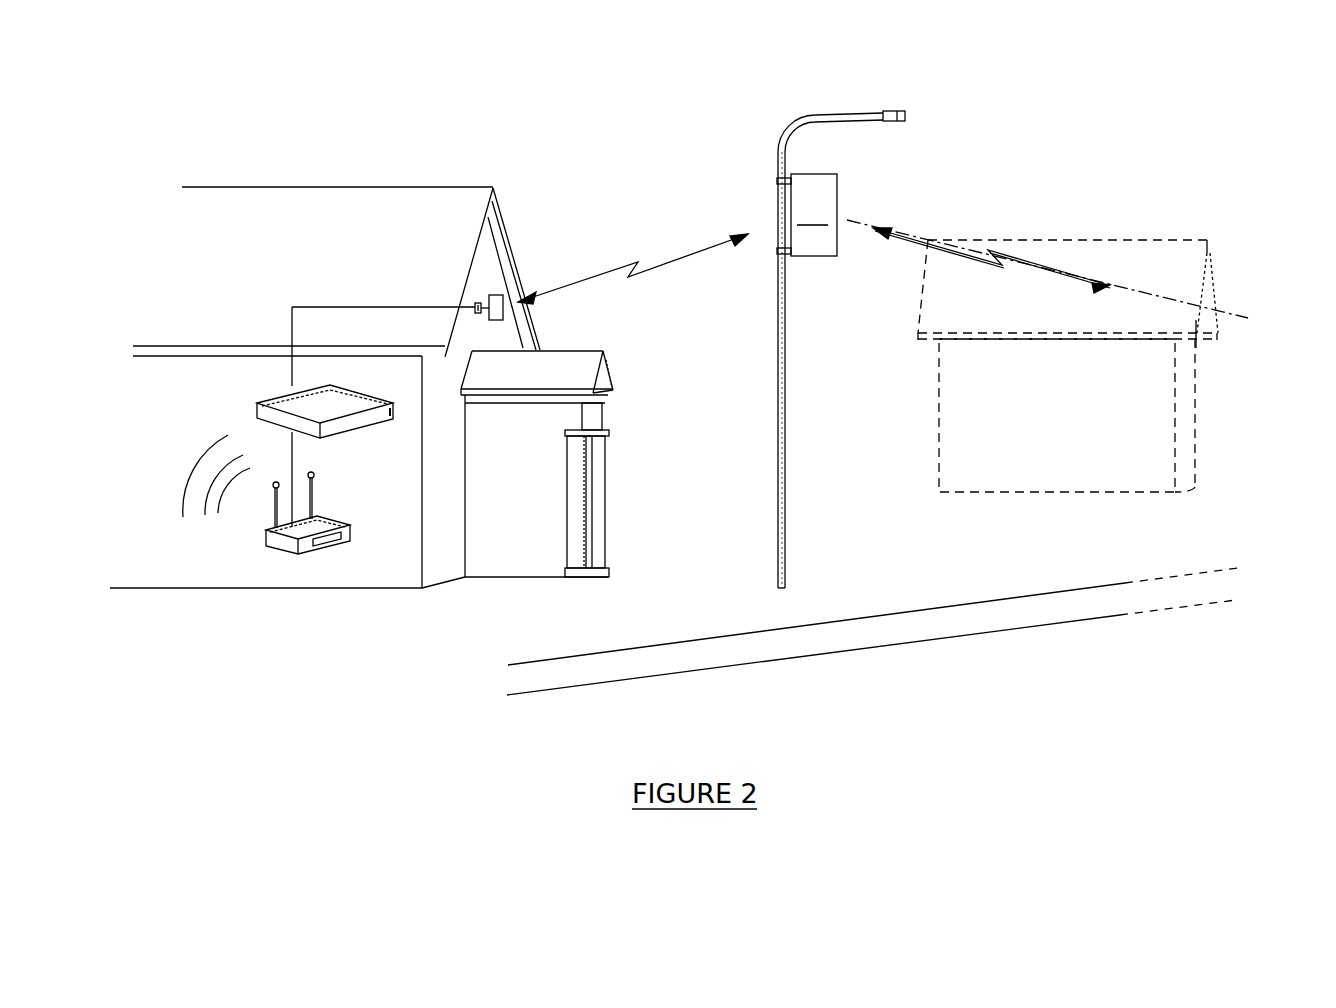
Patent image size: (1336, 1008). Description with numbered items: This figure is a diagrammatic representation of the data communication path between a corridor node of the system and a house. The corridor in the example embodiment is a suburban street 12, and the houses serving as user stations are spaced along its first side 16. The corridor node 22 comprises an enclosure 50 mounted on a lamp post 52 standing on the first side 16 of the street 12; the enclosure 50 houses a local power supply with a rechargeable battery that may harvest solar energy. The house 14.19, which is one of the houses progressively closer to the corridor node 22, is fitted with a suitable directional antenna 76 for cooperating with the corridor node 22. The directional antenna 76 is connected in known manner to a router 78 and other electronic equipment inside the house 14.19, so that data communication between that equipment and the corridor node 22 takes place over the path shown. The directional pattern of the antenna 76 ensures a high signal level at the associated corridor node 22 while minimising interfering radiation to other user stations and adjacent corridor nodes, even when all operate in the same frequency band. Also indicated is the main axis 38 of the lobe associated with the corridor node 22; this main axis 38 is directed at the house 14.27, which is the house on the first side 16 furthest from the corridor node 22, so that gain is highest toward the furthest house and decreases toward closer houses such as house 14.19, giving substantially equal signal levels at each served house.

The suburban street 12 is at (874, 702).
The house 14.19 is at (428, 205).
The house 14.27 is at (1143, 257).
The first side 16 is at (715, 637).
The corridor node 22 is at (855, 202).
The main axis 38 is at (1237, 314).
The enclosure 50 is at (857, 200).
The lamp post 52 is at (787, 413).
The directional antenna 76 is at (490, 297).
The router 78 is at (256, 410).